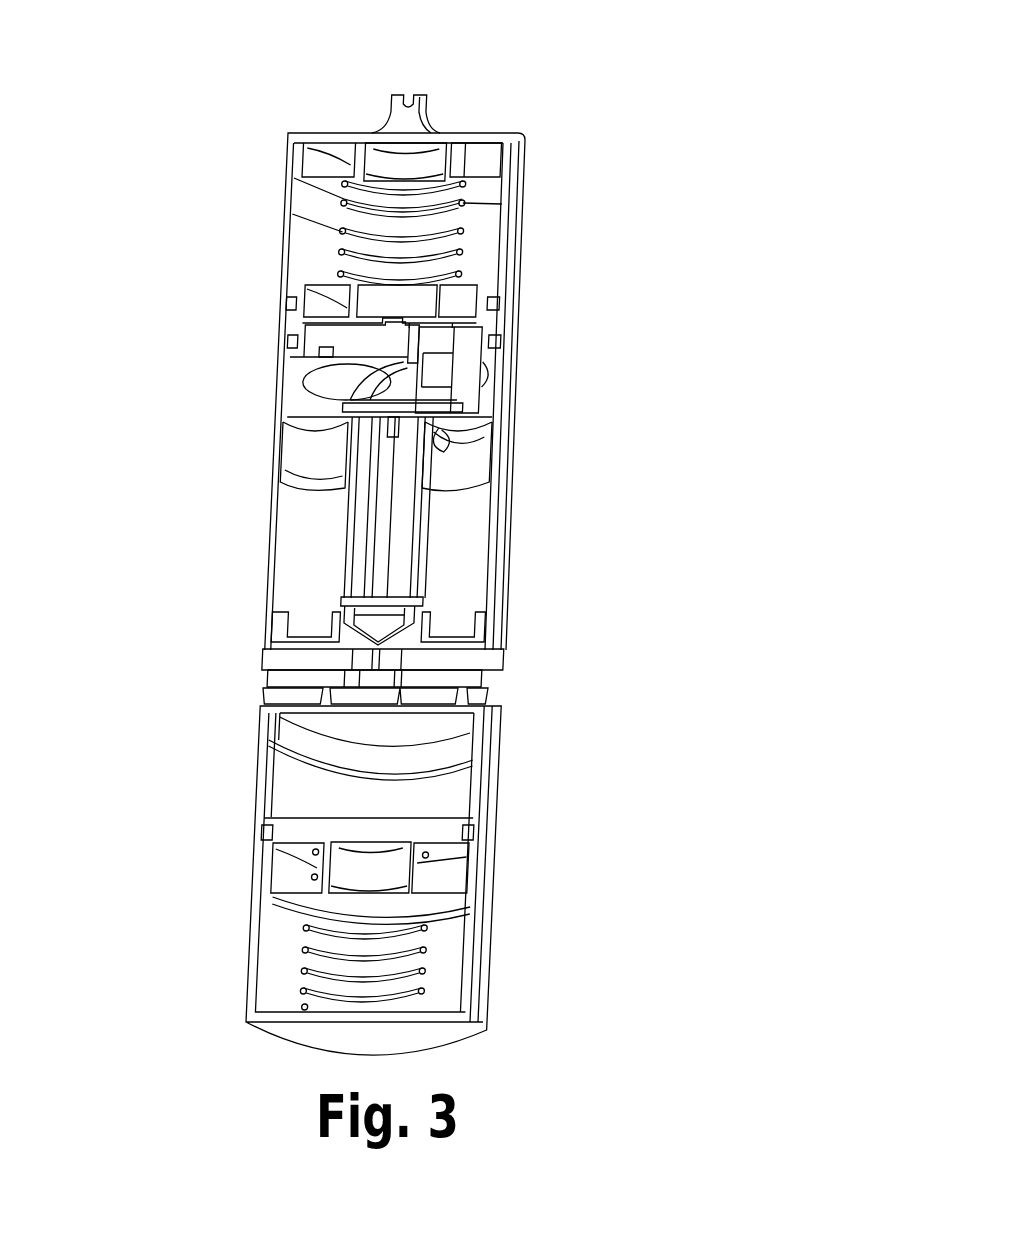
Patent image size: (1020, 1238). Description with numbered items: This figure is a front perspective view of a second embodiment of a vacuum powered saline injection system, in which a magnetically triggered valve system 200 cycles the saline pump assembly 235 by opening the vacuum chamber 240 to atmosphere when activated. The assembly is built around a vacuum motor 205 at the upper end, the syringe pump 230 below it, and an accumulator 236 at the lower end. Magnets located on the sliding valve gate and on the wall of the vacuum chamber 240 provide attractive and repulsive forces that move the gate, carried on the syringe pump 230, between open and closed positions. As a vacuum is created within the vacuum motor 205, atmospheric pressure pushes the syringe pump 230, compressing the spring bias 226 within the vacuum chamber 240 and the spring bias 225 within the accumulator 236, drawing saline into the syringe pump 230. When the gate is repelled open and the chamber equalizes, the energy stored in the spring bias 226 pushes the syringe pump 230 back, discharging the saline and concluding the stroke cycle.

The magnetically triggered valve system 200 is at (555, 70).
The vacuum motor 205 is at (532, 410).
The spring bias 225 is at (423, 933).
The spring bias 226 is at (300, 216).
The syringe pump 230 is at (533, 420).
The saline pump assembly 235 is at (273, 127).
The accumulator 236 is at (250, 697).
The vacuum chamber 240 is at (480, 229).